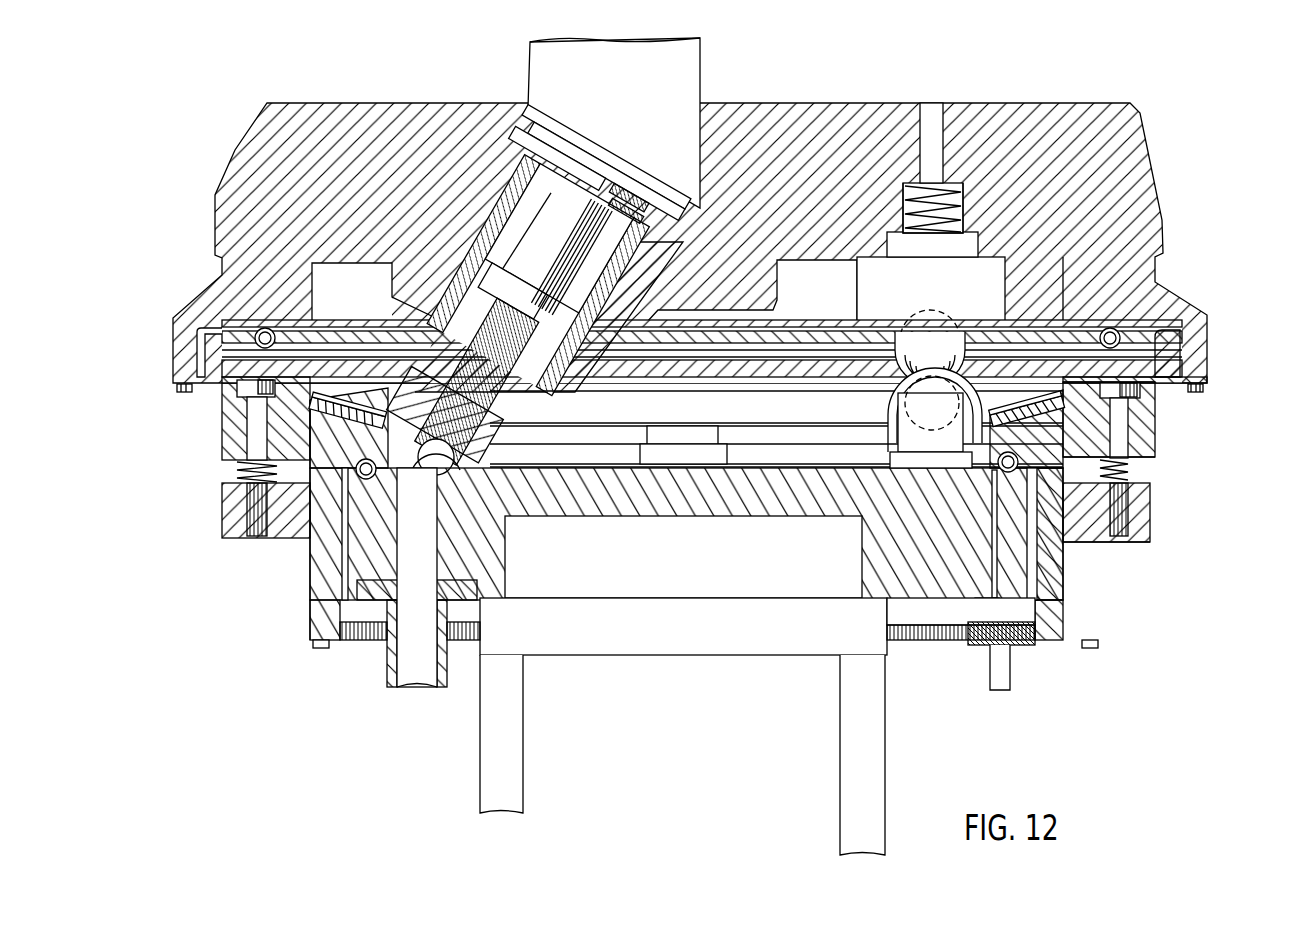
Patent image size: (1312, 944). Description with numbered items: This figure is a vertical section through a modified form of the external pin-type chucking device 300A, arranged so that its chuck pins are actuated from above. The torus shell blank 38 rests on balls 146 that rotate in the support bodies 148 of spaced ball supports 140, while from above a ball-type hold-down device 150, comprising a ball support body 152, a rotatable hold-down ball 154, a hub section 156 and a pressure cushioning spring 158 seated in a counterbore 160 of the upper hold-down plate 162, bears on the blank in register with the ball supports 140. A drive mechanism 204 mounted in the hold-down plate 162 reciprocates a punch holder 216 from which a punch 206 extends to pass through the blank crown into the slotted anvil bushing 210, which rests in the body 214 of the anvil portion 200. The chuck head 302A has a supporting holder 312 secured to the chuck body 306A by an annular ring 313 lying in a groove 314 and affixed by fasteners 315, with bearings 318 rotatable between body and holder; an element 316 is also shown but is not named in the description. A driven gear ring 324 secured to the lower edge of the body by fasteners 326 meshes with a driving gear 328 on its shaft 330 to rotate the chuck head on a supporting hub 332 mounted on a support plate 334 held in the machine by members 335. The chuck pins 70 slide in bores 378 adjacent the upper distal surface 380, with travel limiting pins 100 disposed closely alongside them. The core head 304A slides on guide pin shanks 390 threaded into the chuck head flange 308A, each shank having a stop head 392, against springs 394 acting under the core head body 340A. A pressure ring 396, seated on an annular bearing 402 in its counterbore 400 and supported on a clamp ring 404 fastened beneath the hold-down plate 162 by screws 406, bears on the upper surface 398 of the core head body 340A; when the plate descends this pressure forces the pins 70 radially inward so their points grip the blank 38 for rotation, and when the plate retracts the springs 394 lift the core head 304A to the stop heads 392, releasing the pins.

The torus shell blank 38 is at (962, 378).
The chuck pin 70 is at (1030, 410).
The detent pin 100 is at (1060, 425).
The ball support 140 is at (893, 432).
The support ball 146 is at (912, 400).
The support body 148 is at (905, 462).
The ball-type blank hold-down device 150 is at (1008, 280).
The ball support body 152 is at (860, 280).
The hold-down ball 154 is at (932, 345).
The hub section 156 is at (978, 246).
The pressure cushioning spring 158 is at (905, 200).
The counterbore 160 is at (963, 196).
The upper hold-down plate 162 is at (1140, 158).
The anvil portion 200 is at (480, 462).
The drive mechanism 204 is at (700, 62).
The punch 206 is at (553, 313).
The anvil bushing 210 is at (470, 420).
The anvil body 214 is at (450, 466).
The punch holder 216 is at (520, 225).
The external chucking device 300A is at (1162, 535).
The chuck head 302A is at (1070, 605).
The core head 304A is at (1165, 418).
The chuck body 306A is at (305, 527).
The chuck head flange 308A is at (1150, 512).
The supporting holder 312 is at (760, 490).
The annular ring 313 is at (995, 598).
The groove 314 is at (330, 600).
The fasteners 315 is at (985, 600).
The side wall plate 316 is at (1030, 570).
The bearings 318 is at (366, 480).
The driven gear ring 324 is at (905, 640).
The fasteners 326 is at (1098, 644).
The driving gear 328 is at (982, 648).
The shaft 330 is at (1010, 672).
The supporting hub 332 is at (860, 550).
The support plate 334 is at (868, 610).
The securing members 335 is at (490, 728).
The core head body 340A is at (1152, 445).
The pin bores 378 is at (362, 410).
The upper distal surface 380 is at (330, 405).
The guide pin shanks 390 is at (260, 432).
The travel limiting stop head 392 is at (1150, 395).
The springs 394 is at (238, 470).
The pressure ring 396 is at (1178, 350).
The upper surface 398 is at (1093, 377).
The counterbore 400 is at (240, 383).
The annular bearing 402 is at (245, 320).
The clamp ring 404 is at (1190, 376).
The screws 406 is at (177, 390).